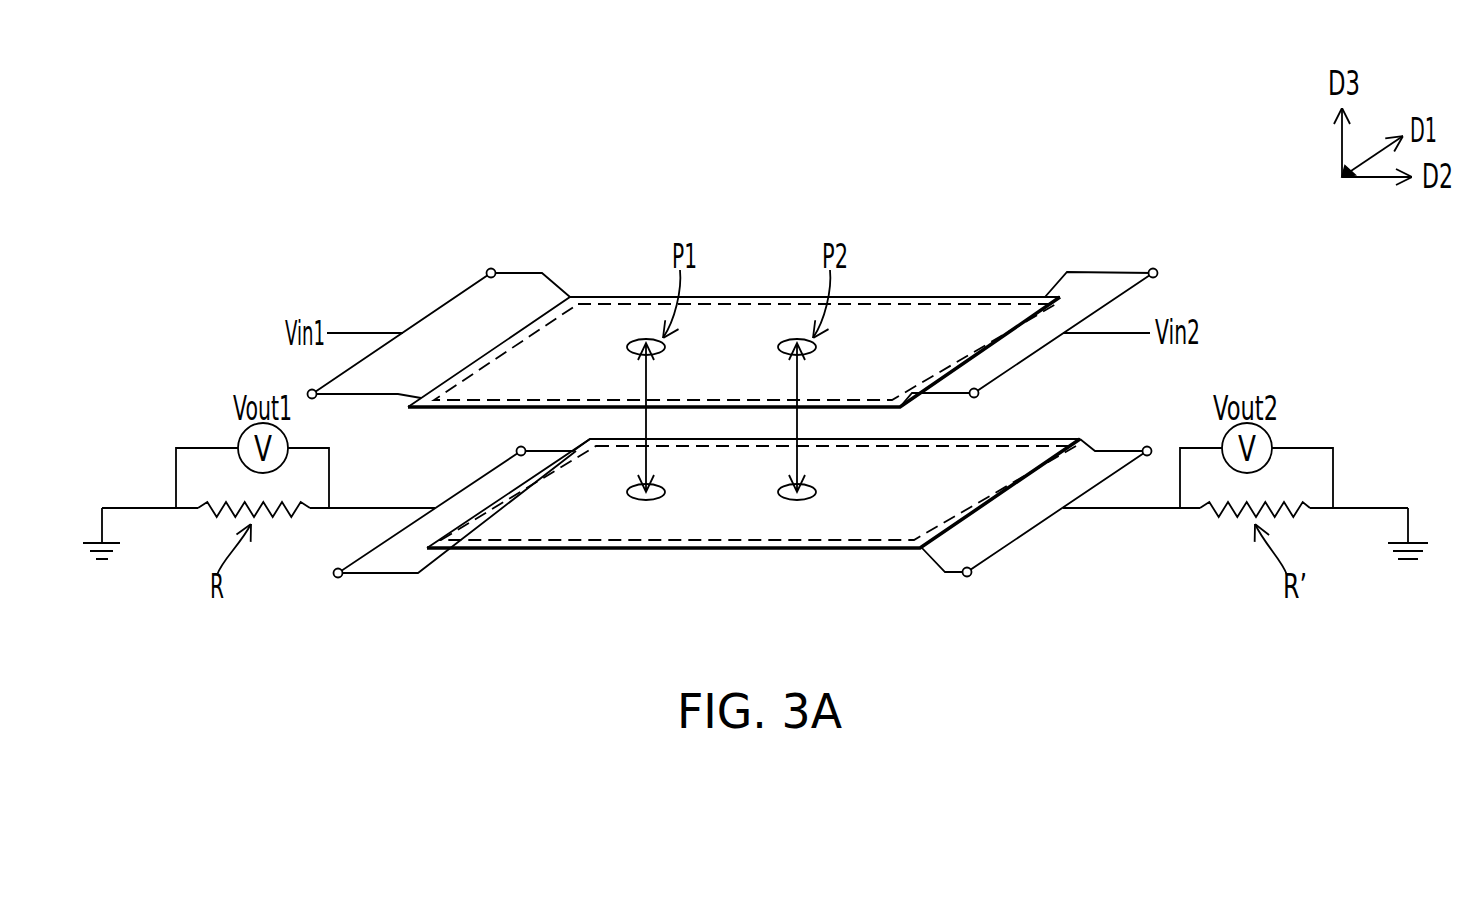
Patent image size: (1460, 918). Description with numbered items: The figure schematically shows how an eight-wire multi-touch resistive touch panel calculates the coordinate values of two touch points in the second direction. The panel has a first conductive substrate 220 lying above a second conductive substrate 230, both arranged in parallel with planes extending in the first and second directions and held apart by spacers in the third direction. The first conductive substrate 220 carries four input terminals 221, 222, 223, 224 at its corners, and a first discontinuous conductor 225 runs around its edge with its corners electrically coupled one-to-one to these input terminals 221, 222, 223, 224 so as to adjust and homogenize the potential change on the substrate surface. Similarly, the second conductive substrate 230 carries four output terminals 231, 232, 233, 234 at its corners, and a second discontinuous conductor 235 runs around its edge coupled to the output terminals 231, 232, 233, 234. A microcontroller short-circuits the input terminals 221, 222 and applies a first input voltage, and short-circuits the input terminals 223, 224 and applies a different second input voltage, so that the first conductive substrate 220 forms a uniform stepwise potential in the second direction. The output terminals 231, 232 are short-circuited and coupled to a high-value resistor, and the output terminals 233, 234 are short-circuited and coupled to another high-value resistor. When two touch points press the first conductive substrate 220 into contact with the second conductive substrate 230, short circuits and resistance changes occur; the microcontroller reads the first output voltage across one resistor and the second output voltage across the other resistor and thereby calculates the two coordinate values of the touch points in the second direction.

The first conductive substrate 220 is at (890, 338).
The input terminal 221 is at (307, 391).
The input terminal 222 is at (497, 268).
The input terminal 223 is at (983, 395).
The input terminal 224 is at (1158, 268).
The first discontinuous conductor 225 is at (630, 297).
The second conductive substrate 230 is at (862, 505).
The output terminal 231 is at (331, 574).
The output terminal 232 is at (514, 450).
The output terminal 233 is at (975, 575).
The output terminal 234 is at (1152, 445).
The second discontinuous conductor 235 is at (538, 542).